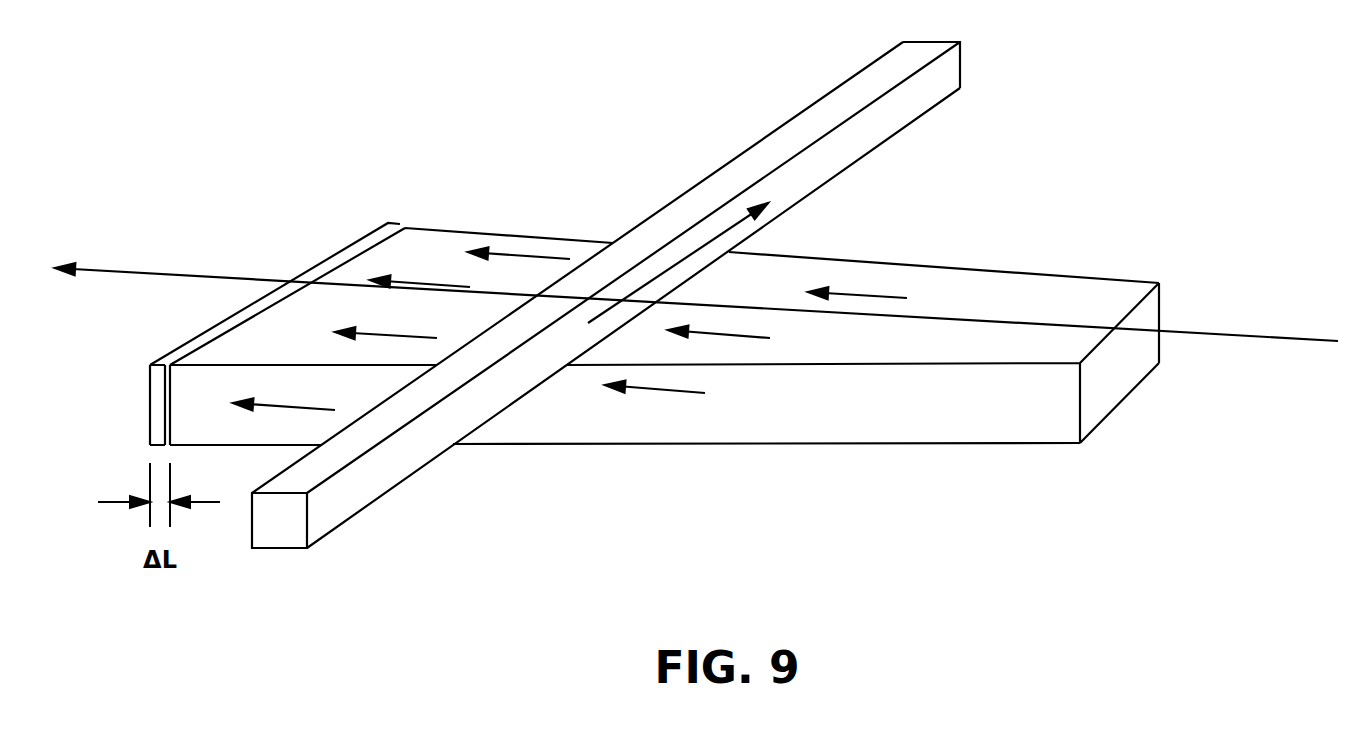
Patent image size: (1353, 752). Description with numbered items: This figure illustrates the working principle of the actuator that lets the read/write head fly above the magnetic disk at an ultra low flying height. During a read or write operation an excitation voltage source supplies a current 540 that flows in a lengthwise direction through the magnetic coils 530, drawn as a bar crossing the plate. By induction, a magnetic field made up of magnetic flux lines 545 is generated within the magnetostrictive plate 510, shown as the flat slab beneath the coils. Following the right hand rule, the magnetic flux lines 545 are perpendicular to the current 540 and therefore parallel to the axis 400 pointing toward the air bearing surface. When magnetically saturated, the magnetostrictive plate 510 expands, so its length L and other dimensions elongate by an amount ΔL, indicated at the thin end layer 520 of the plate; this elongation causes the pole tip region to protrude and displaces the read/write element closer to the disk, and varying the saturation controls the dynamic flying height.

The axis 400 is at (1220, 331).
The magnetostrictive plate 510 is at (937, 305).
The end layer 520 is at (255, 315).
The magnetic coils 530 is at (802, 120).
The current 540 is at (720, 233).
The magnetic flux lines 545 is at (855, 302).